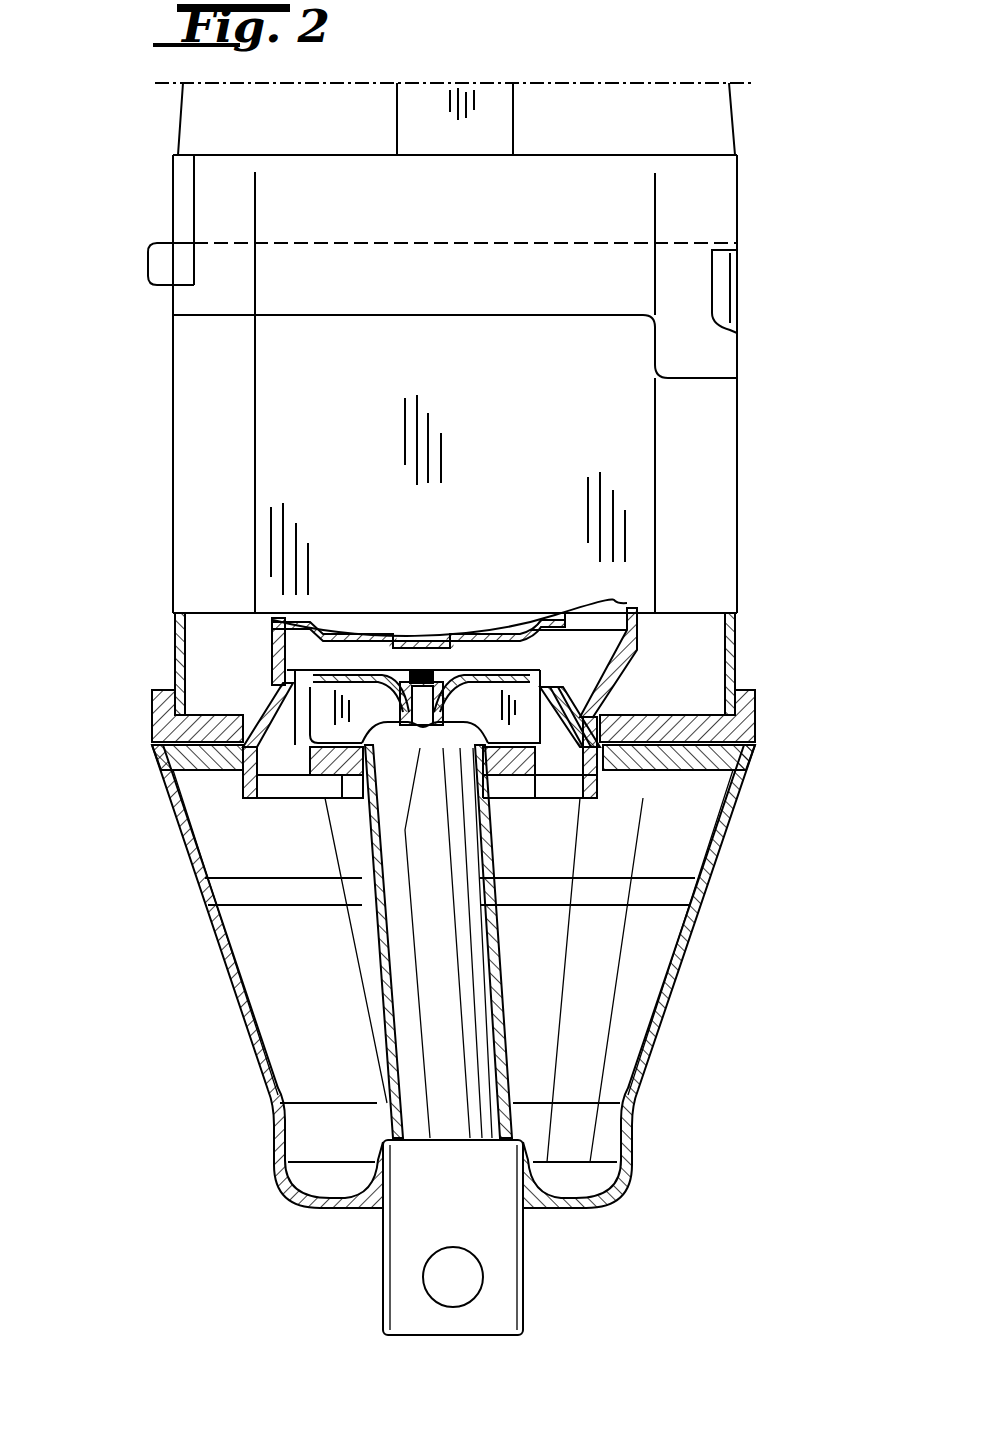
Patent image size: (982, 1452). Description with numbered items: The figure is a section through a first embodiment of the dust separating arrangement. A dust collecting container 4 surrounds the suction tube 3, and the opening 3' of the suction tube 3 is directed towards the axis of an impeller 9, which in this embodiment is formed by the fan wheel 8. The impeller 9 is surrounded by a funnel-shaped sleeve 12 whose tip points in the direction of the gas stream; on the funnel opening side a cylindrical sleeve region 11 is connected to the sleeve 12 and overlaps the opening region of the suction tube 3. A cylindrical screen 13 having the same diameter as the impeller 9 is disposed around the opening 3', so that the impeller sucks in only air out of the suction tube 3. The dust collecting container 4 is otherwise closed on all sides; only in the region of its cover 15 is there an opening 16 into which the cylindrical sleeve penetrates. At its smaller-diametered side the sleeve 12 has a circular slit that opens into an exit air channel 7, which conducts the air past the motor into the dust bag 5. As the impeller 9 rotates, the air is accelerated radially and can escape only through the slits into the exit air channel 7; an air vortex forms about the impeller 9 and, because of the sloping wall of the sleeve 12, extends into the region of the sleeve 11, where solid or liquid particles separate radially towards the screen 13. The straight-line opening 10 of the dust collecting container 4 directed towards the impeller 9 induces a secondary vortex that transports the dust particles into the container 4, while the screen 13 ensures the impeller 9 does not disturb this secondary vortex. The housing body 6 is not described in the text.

The suction tube 3 is at (599, 941).
The opening of the suction tube 3' is at (281, 871).
The dust collecting container 4 is at (617, 1072).
The dust bag 5 is at (667, 122).
The housing 6 is at (553, 458).
The exit air channel 7 is at (567, 659).
The fan wheel 8 is at (480, 708).
The impeller 9 is at (517, 737).
The straight-line opening of the dust collecting container 10 is at (557, 788).
The cylindrical sleeve region 11 is at (530, 760).
The funnel-shaped sleeve 12 is at (590, 740).
The screen 13 is at (330, 770).
The cover 15 is at (163, 722).
The opening 16 is at (237, 765).